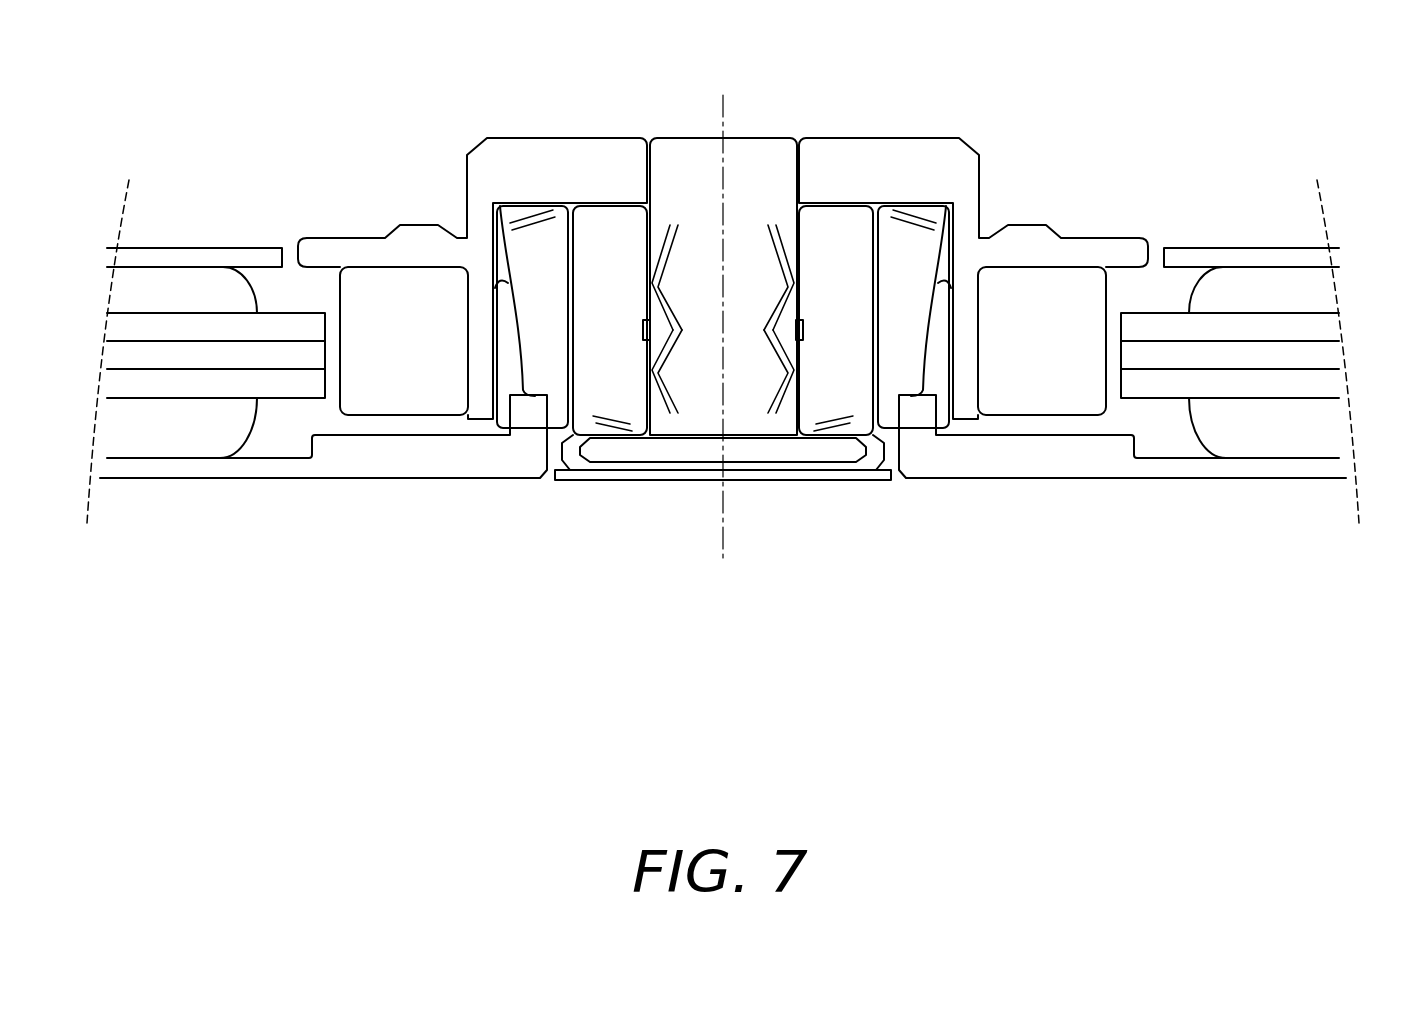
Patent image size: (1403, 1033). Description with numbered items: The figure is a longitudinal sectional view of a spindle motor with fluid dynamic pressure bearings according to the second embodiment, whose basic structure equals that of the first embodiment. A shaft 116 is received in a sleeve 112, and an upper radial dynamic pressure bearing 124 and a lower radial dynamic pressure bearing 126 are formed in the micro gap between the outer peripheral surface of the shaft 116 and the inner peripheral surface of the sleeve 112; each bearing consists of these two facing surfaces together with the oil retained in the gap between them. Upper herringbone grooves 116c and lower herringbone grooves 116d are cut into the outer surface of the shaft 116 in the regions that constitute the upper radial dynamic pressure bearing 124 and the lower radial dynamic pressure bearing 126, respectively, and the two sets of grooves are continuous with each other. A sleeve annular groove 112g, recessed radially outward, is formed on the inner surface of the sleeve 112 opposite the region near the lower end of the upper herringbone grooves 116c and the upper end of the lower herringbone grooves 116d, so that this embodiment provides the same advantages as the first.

The sleeve 112 is at (852, 395).
The sleeve annular groove 112g is at (643, 330).
The shaft 116 is at (703, 225).
The upper herringbone grooves 116c is at (660, 287).
The lower herringbone grooves 116d is at (660, 372).
The upper radial dynamic pressure bearing 124 is at (803, 287).
The lower radial dynamic pressure bearing 126 is at (800, 373).